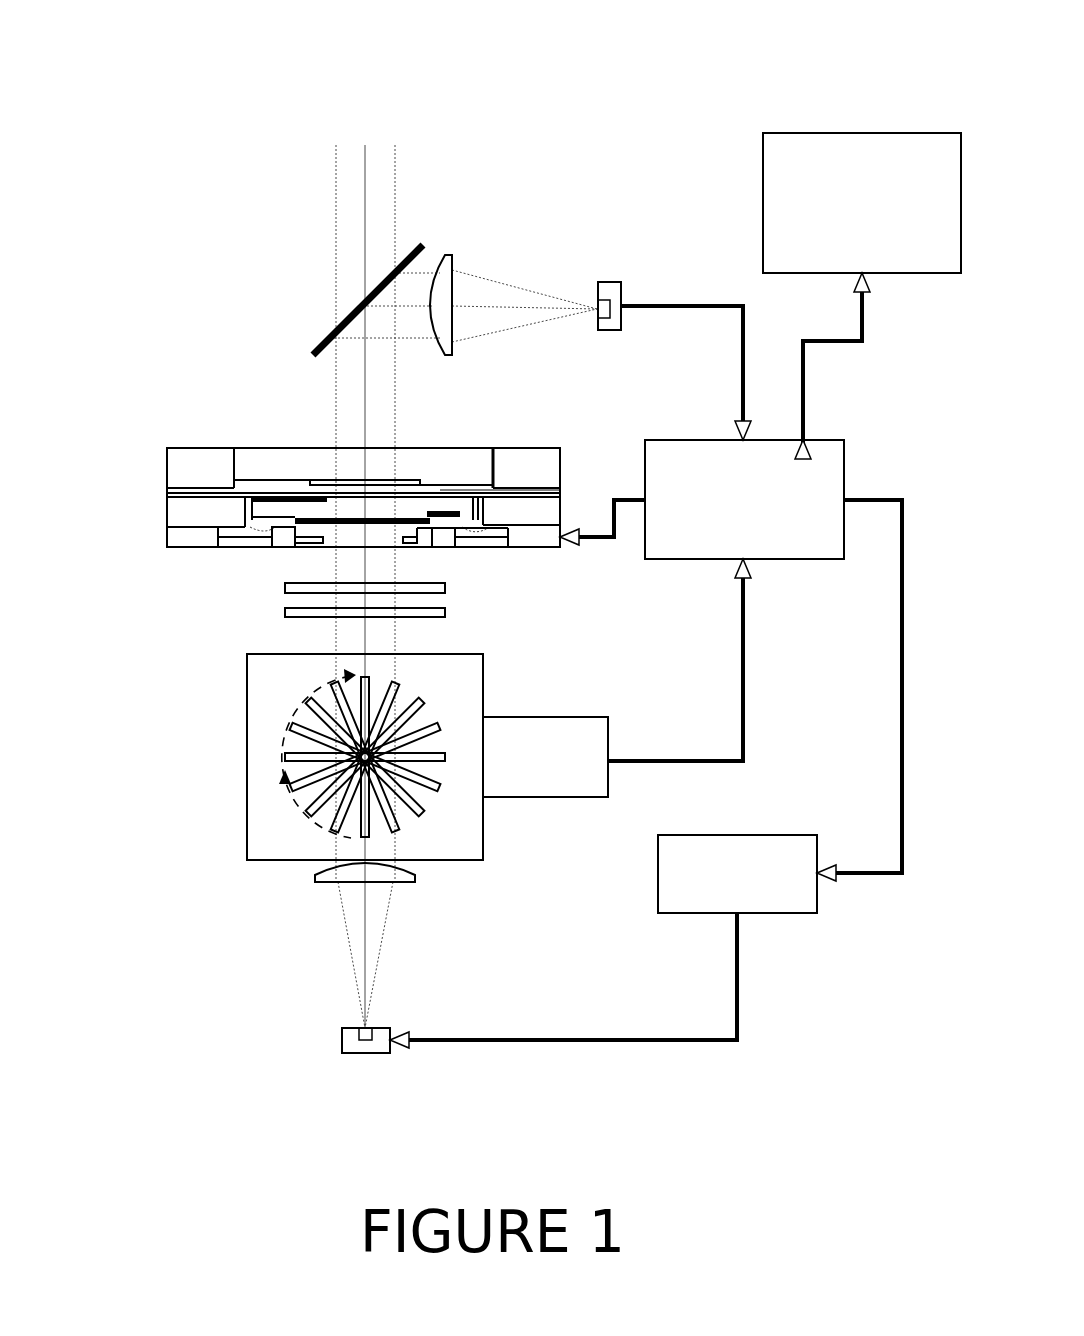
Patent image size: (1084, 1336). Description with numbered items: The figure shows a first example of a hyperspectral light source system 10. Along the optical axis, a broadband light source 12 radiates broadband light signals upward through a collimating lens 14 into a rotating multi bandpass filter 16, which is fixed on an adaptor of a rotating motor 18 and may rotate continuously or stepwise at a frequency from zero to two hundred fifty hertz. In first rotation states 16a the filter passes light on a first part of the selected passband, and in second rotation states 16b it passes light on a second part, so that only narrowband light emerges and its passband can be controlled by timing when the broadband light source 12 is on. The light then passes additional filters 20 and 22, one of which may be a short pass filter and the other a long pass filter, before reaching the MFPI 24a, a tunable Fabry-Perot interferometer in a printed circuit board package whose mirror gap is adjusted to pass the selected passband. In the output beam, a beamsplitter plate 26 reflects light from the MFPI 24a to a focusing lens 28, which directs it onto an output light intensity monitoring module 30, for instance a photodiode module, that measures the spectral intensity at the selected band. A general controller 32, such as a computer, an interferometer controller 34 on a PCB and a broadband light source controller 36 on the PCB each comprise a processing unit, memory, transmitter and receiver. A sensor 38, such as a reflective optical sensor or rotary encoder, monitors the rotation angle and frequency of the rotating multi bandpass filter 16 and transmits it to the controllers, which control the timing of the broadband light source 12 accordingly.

The hyperspectral light source system 10 is at (163, 109).
The broadband light source 12 is at (363, 1053).
The collimating lens 14 is at (317, 880).
The rotating multi bandpass filter 16 is at (287, 757).
The first rotation states 16a is at (290, 830).
The second rotation states 16b is at (290, 690).
The rotating motor 18 is at (247, 657).
The additional filter 20 is at (445, 612).
The additional filter 22 is at (285, 588).
The MFPI 24a is at (167, 466).
The beamsplitter plate 26 is at (312, 347).
The focusing lens 28 is at (453, 258).
The output light intensity monitoring module 30 is at (612, 283).
The general controller 32 is at (884, 226).
The interferometer controller 34 is at (765, 520).
The broadband light source controller 36 is at (758, 897).
The sensor 38 is at (567, 776).